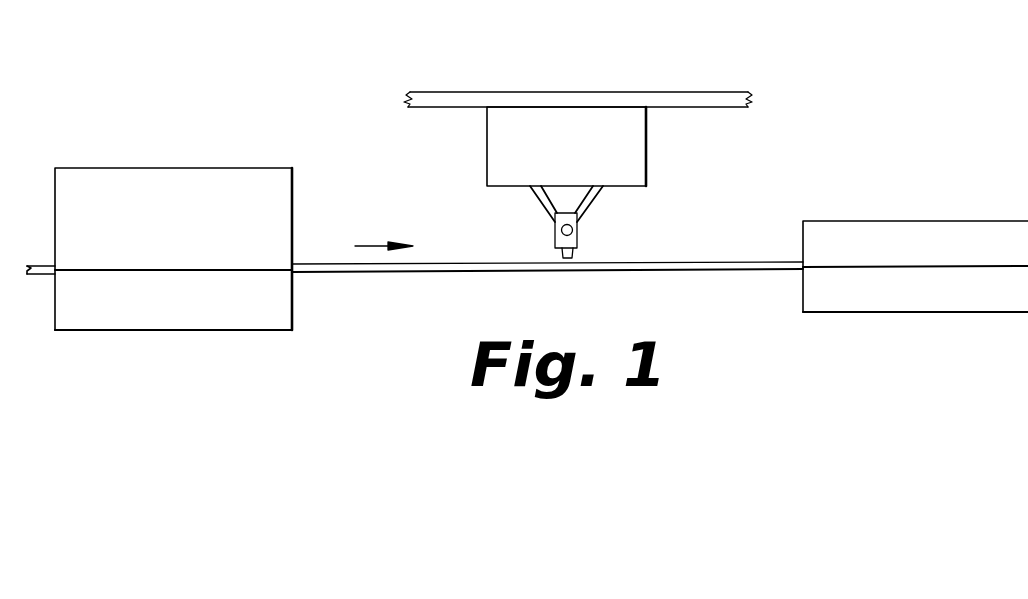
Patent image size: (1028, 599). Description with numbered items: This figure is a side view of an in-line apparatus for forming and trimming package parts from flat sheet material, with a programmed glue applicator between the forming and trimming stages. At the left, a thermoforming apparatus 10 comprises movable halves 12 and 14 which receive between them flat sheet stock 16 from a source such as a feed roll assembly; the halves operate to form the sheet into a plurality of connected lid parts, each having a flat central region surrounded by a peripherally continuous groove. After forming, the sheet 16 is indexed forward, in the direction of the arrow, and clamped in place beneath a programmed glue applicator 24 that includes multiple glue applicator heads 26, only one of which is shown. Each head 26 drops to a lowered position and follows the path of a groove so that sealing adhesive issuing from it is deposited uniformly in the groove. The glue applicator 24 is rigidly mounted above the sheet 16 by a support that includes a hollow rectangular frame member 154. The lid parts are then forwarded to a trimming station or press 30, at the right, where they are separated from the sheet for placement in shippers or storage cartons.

The thermoforming apparatus 10 is at (106, 168).
The movable half 12 is at (256, 186).
The movable half 14 is at (242, 308).
The flat sheet stock 16 is at (401, 265).
The hollow rectangular frame member 154 is at (440, 98).
The programmed glue applicator 24 is at (638, 156).
The glue applicator head 26 is at (572, 240).
The trimming station 30 is at (960, 234).